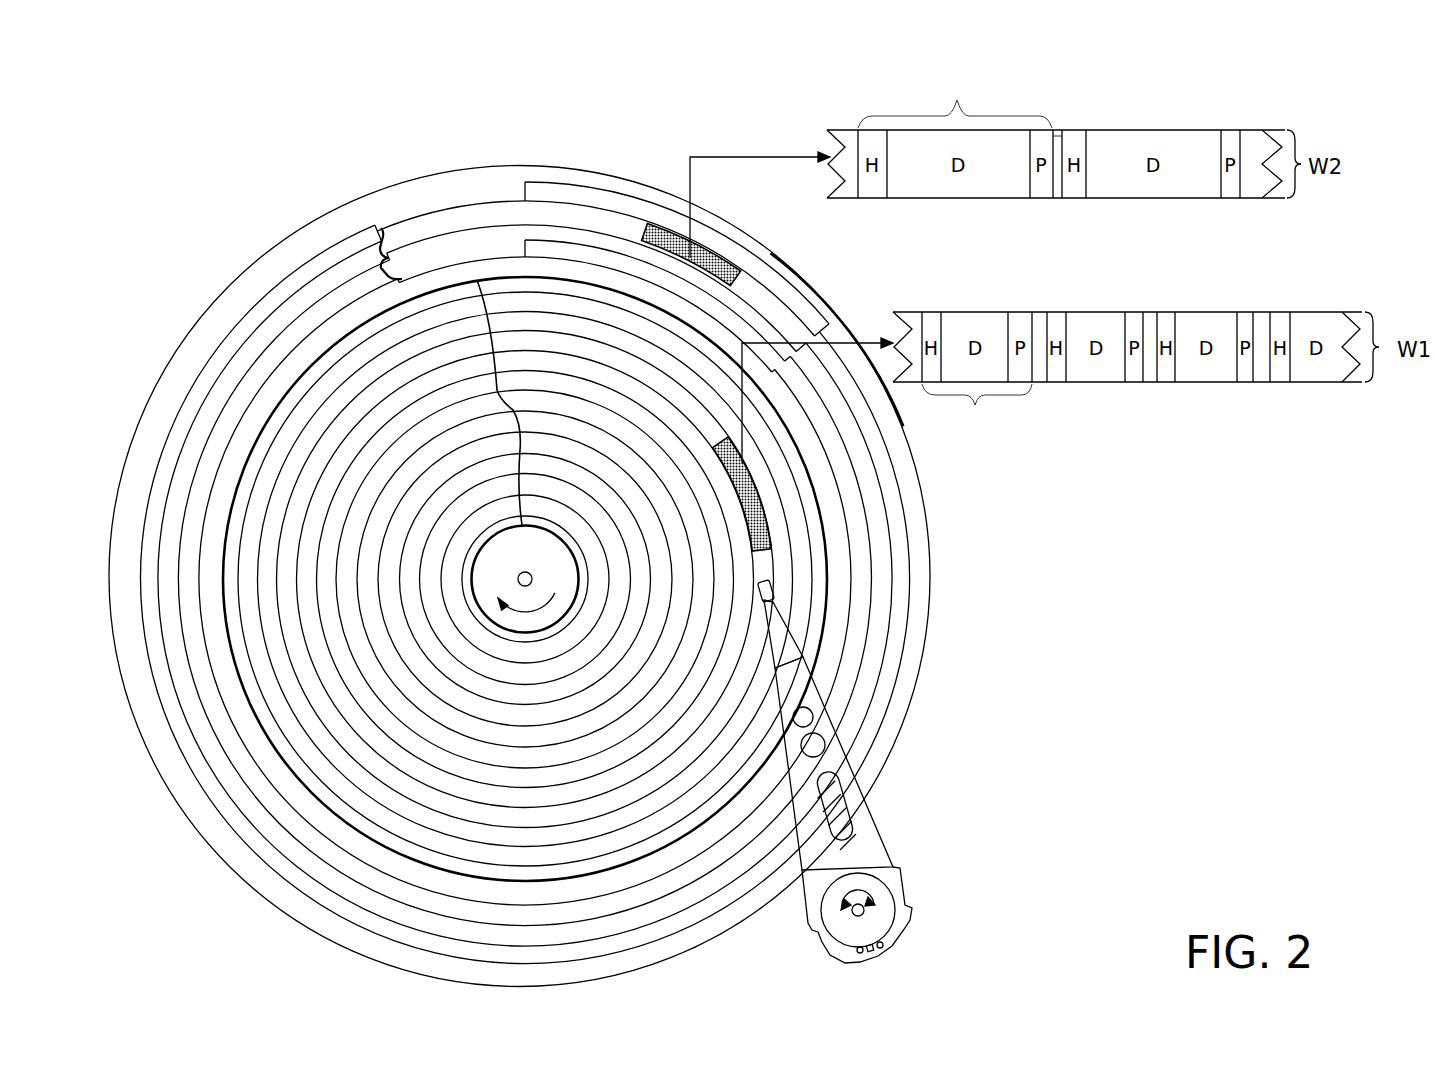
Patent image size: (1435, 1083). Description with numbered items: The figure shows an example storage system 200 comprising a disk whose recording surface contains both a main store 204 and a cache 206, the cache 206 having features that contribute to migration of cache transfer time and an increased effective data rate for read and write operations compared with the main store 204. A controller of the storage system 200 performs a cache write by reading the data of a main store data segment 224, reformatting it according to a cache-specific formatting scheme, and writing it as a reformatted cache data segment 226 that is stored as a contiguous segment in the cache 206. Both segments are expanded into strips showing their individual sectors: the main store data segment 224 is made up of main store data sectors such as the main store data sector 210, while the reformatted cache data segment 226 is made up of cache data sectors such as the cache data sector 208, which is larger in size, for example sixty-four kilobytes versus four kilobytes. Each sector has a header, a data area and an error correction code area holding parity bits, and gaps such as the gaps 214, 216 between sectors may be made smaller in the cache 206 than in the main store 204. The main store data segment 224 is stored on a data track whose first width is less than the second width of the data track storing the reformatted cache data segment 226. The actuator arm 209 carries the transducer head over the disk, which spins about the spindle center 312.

The storage system 200 is at (228, 140).
The main store 204 is at (515, 400).
The cache 206 is at (375, 258).
The cache data sector 208 is at (957, 100).
The actuator arm 209 is at (886, 848).
The main store data sector 210 is at (975, 405).
The gap 214 is at (1058, 137).
The gap 216 is at (1038, 325).
The main store data segment 224 is at (762, 523).
The reformatted cache data segment 226 is at (696, 258).
The spindle center 312 is at (526, 571).